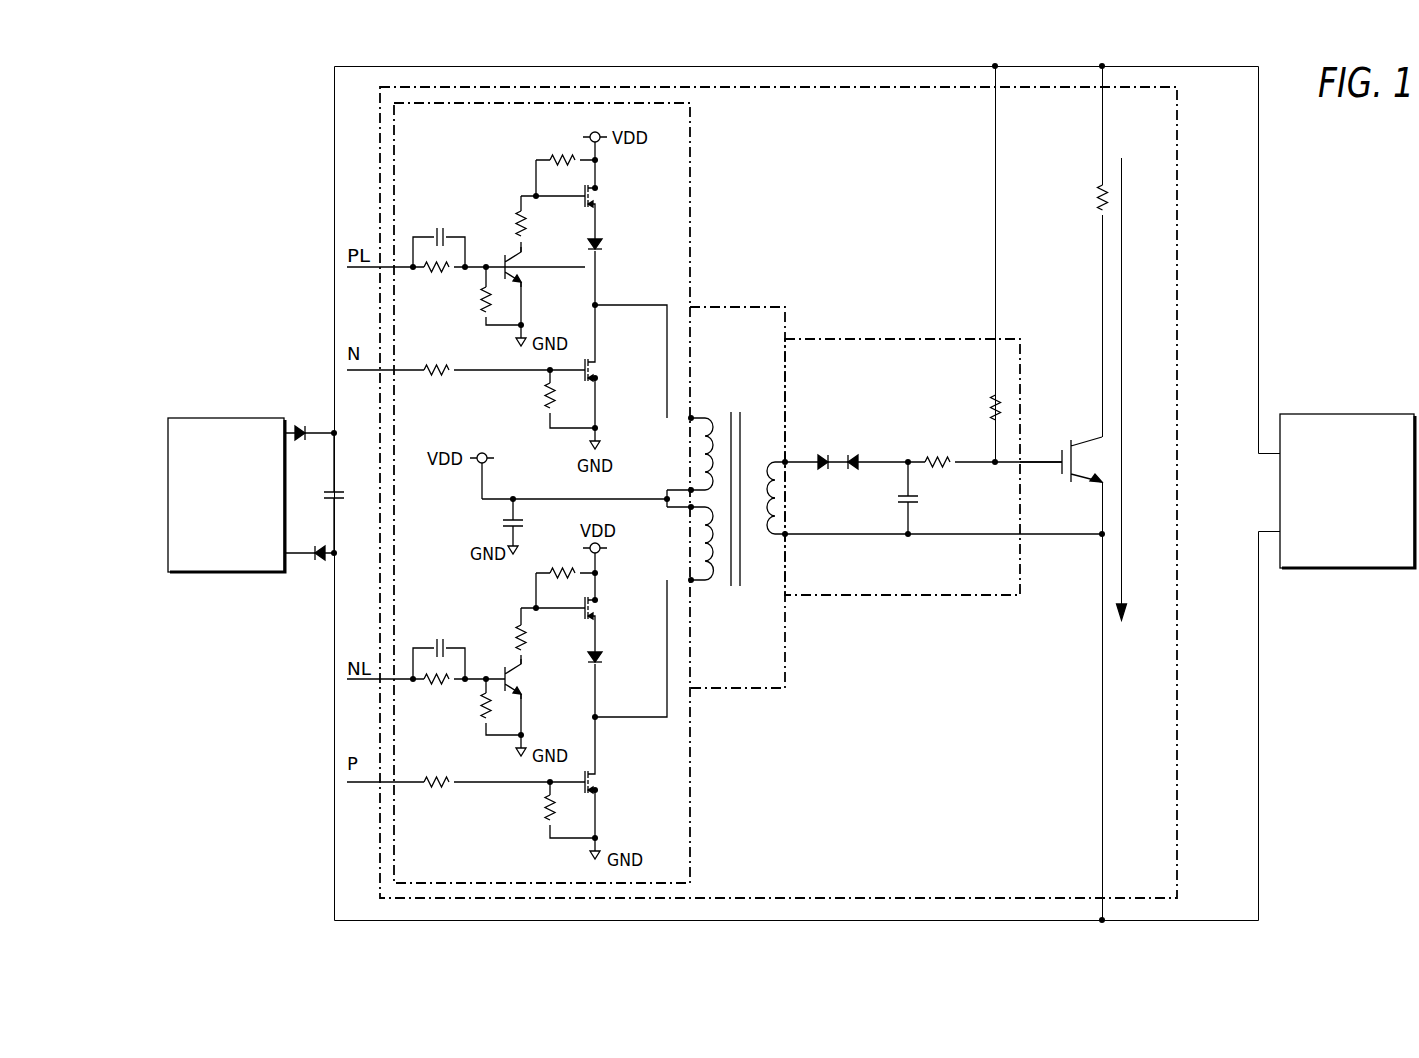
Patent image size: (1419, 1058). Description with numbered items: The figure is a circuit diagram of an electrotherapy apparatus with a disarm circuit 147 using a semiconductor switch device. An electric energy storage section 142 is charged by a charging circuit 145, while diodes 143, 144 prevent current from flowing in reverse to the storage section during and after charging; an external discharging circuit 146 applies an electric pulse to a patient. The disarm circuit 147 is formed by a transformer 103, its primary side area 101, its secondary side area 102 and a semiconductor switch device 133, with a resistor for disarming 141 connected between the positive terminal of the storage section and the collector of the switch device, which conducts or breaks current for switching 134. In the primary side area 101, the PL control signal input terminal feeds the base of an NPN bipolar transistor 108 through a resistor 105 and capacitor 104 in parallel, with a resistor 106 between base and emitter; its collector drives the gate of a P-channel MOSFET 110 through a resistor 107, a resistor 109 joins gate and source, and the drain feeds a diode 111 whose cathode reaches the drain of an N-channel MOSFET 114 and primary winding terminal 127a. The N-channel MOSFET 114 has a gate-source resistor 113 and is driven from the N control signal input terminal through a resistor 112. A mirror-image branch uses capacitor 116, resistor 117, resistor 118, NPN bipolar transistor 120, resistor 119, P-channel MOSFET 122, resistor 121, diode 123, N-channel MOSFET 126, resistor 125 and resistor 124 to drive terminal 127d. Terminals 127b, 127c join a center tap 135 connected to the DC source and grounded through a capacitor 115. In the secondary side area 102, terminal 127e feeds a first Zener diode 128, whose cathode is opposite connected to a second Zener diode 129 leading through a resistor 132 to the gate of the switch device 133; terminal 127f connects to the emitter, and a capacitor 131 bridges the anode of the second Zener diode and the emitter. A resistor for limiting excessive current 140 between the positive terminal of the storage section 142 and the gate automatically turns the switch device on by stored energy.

The primary side area 101 is at (693, 128).
The secondary side area 102 is at (868, 335).
The transformer 103 is at (712, 305).
The capacitor 104 is at (445, 230).
The resistor 105 is at (438, 275).
The resistor 106 is at (484, 310).
The resistor 107 is at (527, 228).
The NPN bipolar transistor 108 is at (525, 265).
The resistor 109 is at (560, 155).
The P-channel MOSFET 110 is at (605, 192).
The diode 111 is at (603, 247).
The resistor 112 is at (435, 378).
The resistor 113 is at (545, 398).
The N-channel MOSFET 114 is at (605, 370).
The capacitor 115 is at (503, 522).
The capacitor 116 is at (447, 642).
The resistor 117 is at (437, 688).
The resistor 118 is at (484, 718).
The resistor 119 is at (527, 640).
The NPN bipolar transistor 120 is at (525, 677).
The resistor 121 is at (555, 568).
The P-channel MOSFET 122 is at (605, 605).
The diode 123 is at (603, 660).
The resistor 124 is at (435, 789).
The resistor 125 is at (545, 806).
The N-channel MOSFET 126 is at (605, 781).
The terminal of primary winding 127a is at (688, 420).
The terminal of primary winding 127b is at (688, 490).
The terminal of primary winding 127c is at (688, 508).
The terminal of primary winding 127d is at (688, 580).
The terminal of secondary winding 127e is at (790, 466).
The terminal of secondary winding 127f is at (790, 537).
The first Zener diode 128 is at (820, 455).
The second Zener diode 129 is at (862, 458).
The capacitor 131 is at (918, 500).
The resistor 132 is at (940, 457).
The semiconductor switch device 133 is at (1062, 442).
The current for switching 134 is at (1140, 162).
The center tap 135 is at (665, 496).
The resistor for limiting excessive current 140 is at (988, 400).
The resistor for disarming 141 is at (1098, 188).
The electric energy storage section 142 is at (336, 488).
The diode 143 is at (302, 428).
The diode 144 is at (318, 560).
The charging circuit 145 is at (228, 416).
The external discharging circuit 146 is at (1340, 413).
The disarm circuit 147 is at (1180, 165).